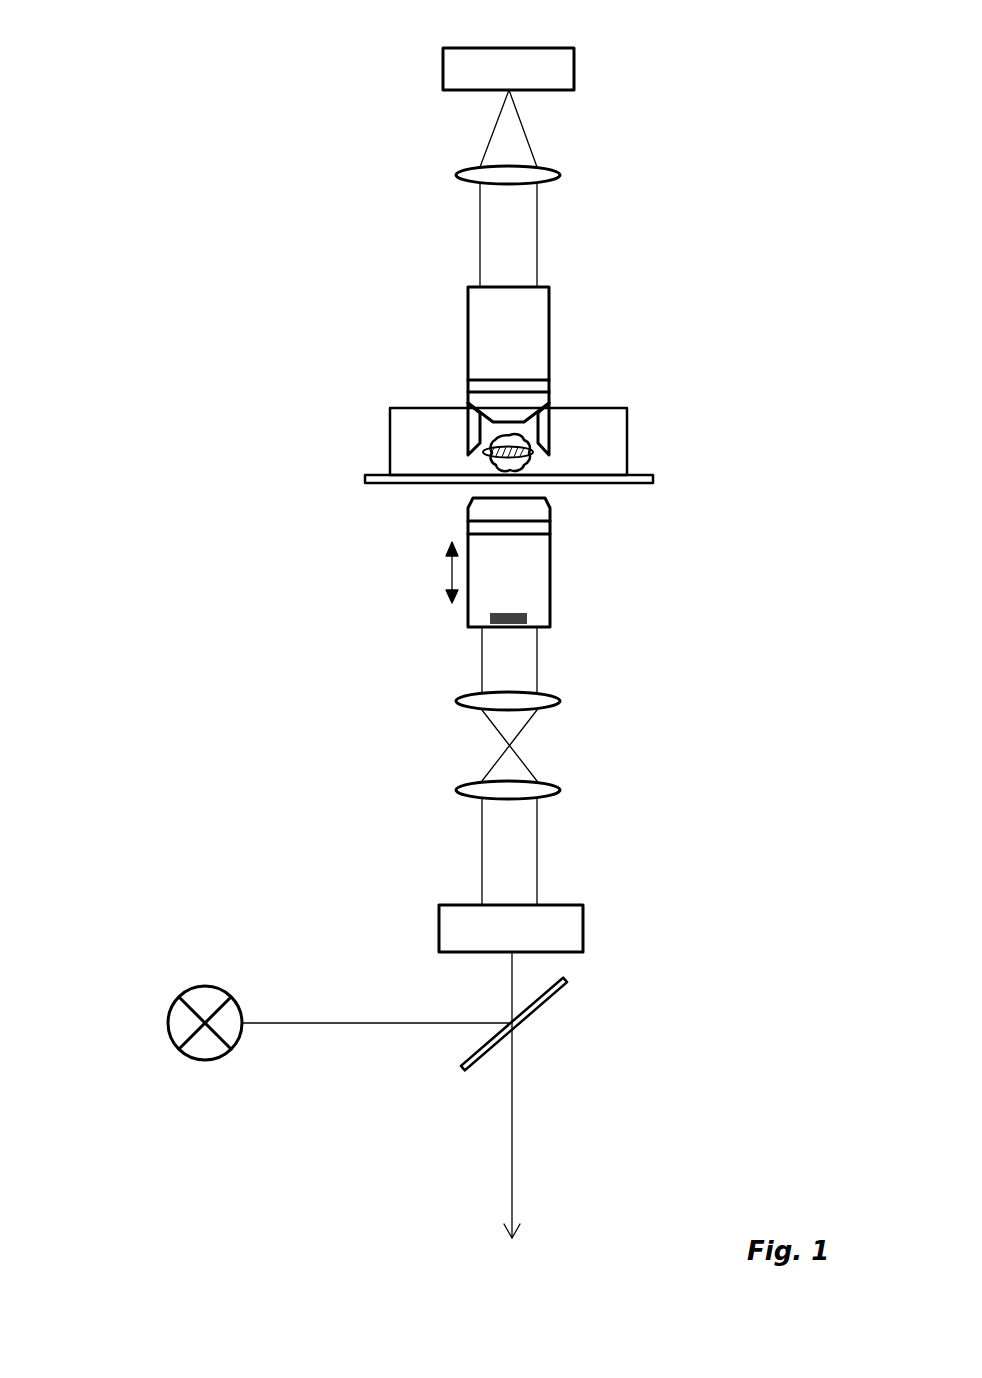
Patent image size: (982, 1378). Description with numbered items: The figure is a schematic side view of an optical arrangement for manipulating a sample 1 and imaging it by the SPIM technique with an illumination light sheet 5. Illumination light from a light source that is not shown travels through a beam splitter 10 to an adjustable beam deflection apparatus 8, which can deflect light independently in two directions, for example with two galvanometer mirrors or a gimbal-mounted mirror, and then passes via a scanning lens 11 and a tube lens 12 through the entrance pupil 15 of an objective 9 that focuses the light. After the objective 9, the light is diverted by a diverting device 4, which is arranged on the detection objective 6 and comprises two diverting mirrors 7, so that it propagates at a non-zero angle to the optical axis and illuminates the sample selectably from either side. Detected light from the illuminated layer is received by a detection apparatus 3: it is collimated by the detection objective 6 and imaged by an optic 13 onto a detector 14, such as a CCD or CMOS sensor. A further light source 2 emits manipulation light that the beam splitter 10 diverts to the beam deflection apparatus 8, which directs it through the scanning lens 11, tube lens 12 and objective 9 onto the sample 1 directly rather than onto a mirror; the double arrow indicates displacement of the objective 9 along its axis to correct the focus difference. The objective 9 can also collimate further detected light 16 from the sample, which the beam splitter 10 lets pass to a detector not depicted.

The sample 1 is at (527, 465).
The further light source 2 is at (178, 998).
The detection apparatus 3 is at (413, 285).
The diverting device 4 is at (593, 430).
The illumination light sheet 5 is at (488, 450).
The detection objective 6 is at (549, 362).
The diverting mirrors 7 is at (468, 430).
The beam deflection apparatus 8 is at (583, 928).
The objective 9 is at (550, 562).
The beam splitter 10 is at (537, 1012).
The scanning lens 11 is at (560, 790).
The tube lens 12 is at (560, 700).
The optic 13 is at (560, 175).
The detector 14 is at (574, 68).
The entrance pupil 15 is at (490, 620).
The further detected light 16 is at (512, 1243).